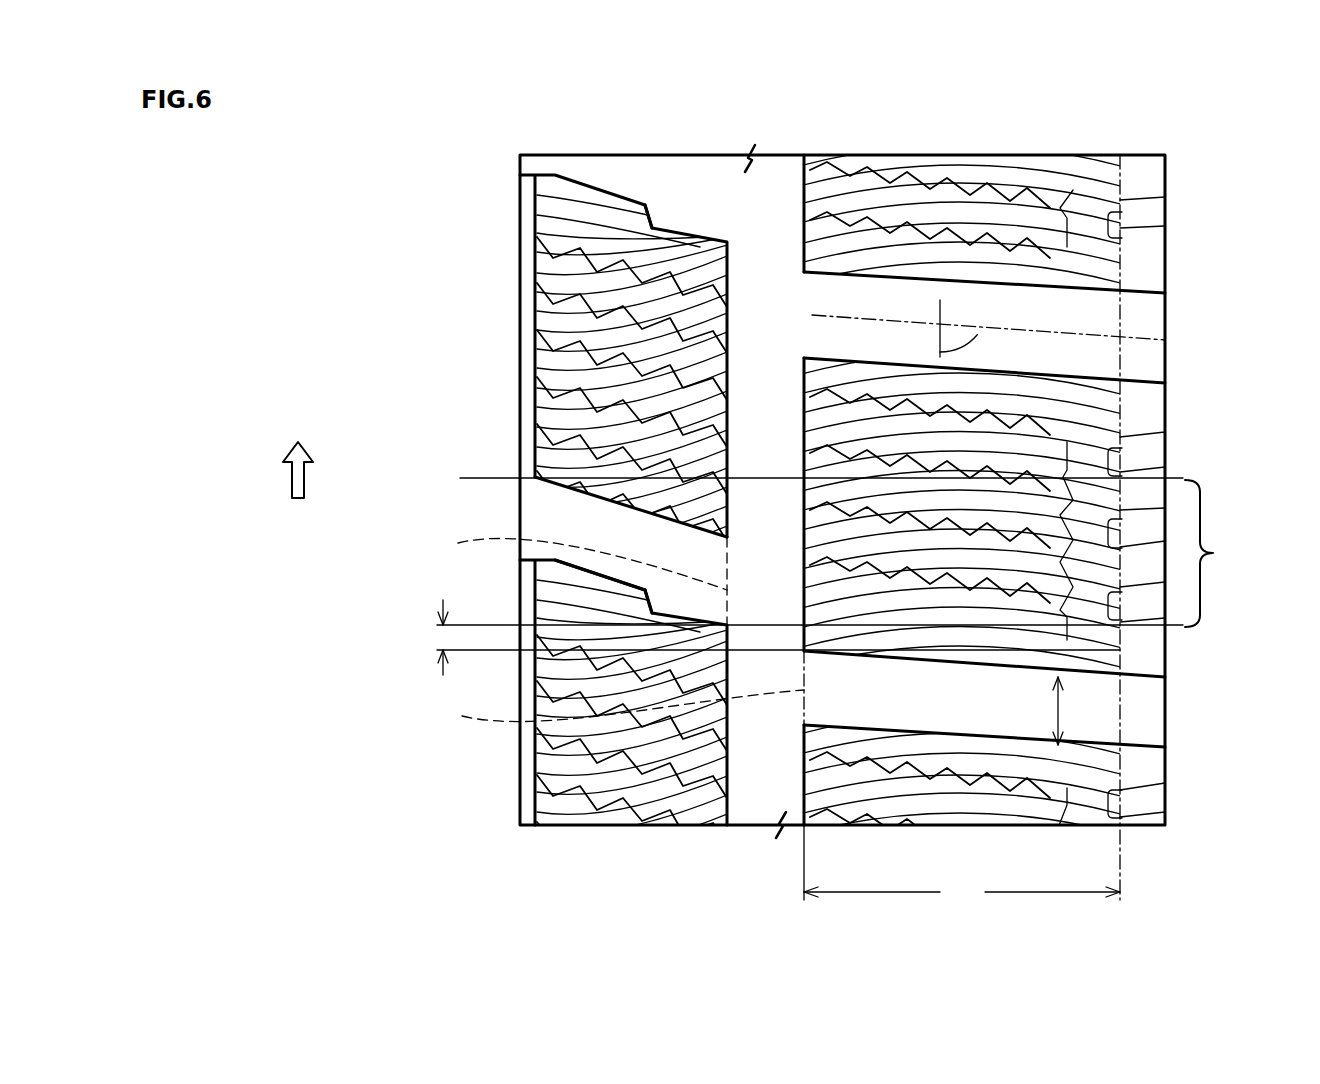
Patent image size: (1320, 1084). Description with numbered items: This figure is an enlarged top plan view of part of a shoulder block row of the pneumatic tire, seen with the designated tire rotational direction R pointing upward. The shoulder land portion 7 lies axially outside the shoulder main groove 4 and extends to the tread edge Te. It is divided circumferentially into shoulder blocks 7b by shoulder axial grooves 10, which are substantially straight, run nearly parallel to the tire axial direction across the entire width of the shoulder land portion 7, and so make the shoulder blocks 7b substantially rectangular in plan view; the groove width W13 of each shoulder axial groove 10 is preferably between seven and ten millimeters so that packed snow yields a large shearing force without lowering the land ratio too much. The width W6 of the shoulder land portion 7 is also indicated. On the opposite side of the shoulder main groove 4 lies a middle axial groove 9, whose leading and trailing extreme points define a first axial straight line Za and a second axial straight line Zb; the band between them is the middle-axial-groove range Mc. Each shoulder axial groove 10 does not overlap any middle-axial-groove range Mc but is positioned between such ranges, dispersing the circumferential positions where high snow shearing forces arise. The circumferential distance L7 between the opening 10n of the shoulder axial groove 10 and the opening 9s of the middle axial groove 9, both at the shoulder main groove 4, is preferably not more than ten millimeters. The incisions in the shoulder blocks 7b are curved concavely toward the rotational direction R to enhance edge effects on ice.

The shoulder land portion 7 is at (1058, 150).
The shoulder block 7b is at (1083, 198).
The shoulder axial groove 10 is at (853, 300).
The opening of the shoulder axial groove 10n is at (827, 335).
The middle axial groove 9 is at (612, 178).
The opening of the middle axial groove 9s is at (692, 203).
The shoulder main groove 4 is at (745, 802).
The tread edge Te is at (1122, 318).
The 1st axial straight line Za is at (490, 478).
The 2nd axial straight line Zb is at (490, 622).
The circumferential distance L7 is at (764, 637).
The groove width of the shoulder axial groove W13 is at (1028, 711).
The shoulder land portion width W6 is at (962, 865).
The middle-axial-groove range Mc is at (1223, 553).
The tire rotational direction R is at (298, 489).